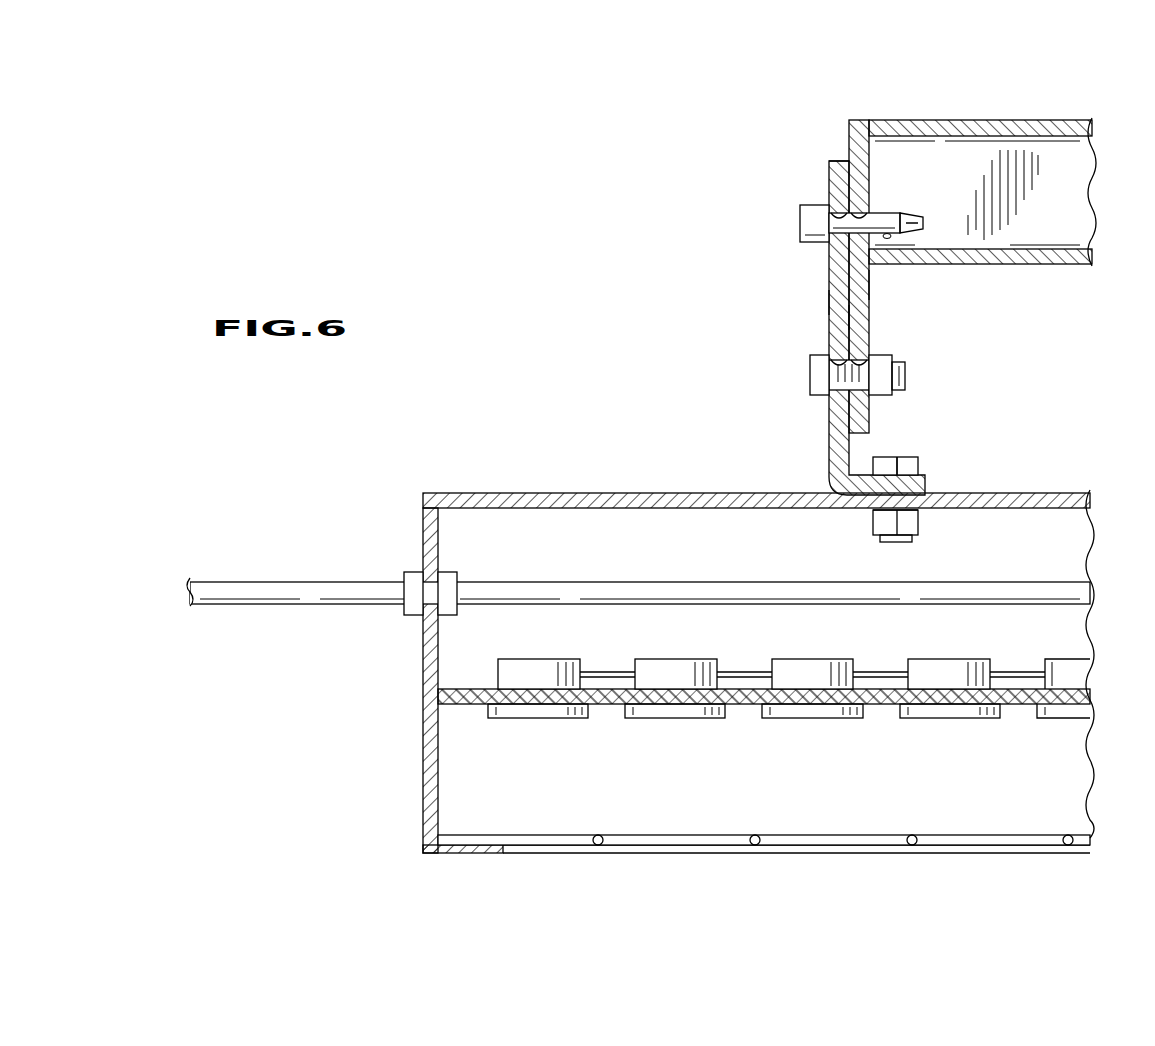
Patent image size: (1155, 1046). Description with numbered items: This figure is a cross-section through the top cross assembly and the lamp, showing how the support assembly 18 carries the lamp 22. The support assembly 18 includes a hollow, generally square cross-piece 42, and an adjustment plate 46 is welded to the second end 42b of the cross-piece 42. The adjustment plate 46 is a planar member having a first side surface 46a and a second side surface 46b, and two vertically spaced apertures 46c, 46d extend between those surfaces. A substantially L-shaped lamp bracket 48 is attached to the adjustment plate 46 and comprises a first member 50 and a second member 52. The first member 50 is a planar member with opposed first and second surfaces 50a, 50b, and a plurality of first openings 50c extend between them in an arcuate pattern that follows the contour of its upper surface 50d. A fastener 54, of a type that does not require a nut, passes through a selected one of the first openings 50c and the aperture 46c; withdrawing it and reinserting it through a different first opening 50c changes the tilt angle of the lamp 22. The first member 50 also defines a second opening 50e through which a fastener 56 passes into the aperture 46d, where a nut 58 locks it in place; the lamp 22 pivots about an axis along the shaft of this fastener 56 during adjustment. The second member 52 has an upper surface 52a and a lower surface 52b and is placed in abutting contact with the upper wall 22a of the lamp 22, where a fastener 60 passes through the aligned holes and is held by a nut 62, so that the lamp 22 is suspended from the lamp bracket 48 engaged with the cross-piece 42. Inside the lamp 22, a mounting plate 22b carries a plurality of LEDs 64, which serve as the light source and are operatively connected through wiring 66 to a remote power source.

The support assembly 18 is at (836, 96).
The lamp 22 is at (640, 638).
The upper wall 22a is at (641, 493).
The mounting plate 22b is at (738, 706).
The cross-piece 42 is at (991, 163).
The second end 42b is at (901, 120).
The adjustment plate 46 is at (817, 272).
The first side surface 46a is at (870, 284).
The second side surface 46b is at (846, 134).
The aperture 46c is at (873, 212).
The aperture 46d is at (876, 360).
The lamp bracket 48 is at (813, 319).
The first member 50 is at (838, 319).
The first surface 50a is at (851, 320).
The second surface 50b is at (830, 300).
The first opening 50c is at (808, 214).
The upper surface 50d is at (845, 160).
The second opening 50e is at (812, 362).
The second member 52 is at (952, 479).
The upper surface 52a is at (910, 458).
The lower surface 52b is at (919, 524).
The fastener 54 is at (814, 243).
The fastener 56 is at (810, 385).
The nut 58 is at (884, 400).
The fastener 60 is at (890, 456).
The nut 62 is at (873, 522).
The LED 64 is at (535, 720).
The wiring 66 is at (287, 582).